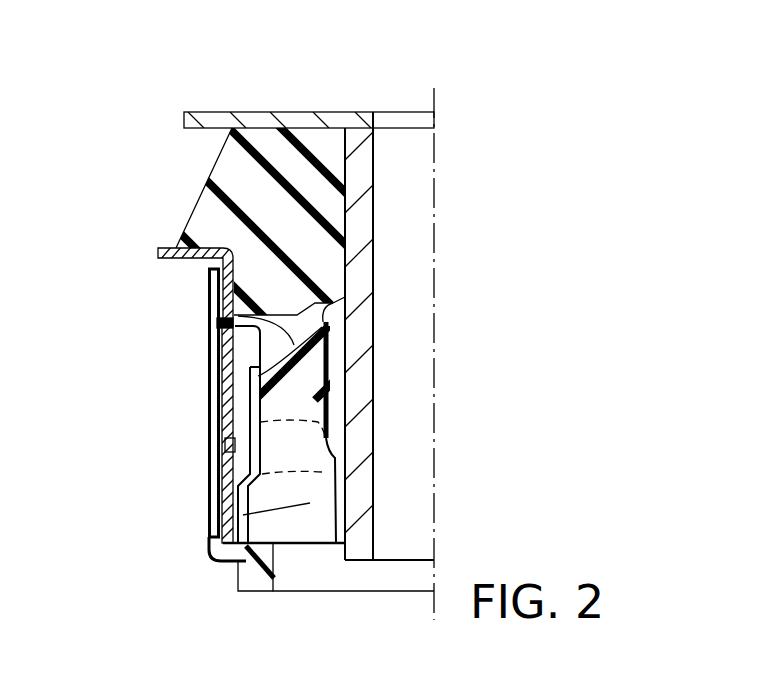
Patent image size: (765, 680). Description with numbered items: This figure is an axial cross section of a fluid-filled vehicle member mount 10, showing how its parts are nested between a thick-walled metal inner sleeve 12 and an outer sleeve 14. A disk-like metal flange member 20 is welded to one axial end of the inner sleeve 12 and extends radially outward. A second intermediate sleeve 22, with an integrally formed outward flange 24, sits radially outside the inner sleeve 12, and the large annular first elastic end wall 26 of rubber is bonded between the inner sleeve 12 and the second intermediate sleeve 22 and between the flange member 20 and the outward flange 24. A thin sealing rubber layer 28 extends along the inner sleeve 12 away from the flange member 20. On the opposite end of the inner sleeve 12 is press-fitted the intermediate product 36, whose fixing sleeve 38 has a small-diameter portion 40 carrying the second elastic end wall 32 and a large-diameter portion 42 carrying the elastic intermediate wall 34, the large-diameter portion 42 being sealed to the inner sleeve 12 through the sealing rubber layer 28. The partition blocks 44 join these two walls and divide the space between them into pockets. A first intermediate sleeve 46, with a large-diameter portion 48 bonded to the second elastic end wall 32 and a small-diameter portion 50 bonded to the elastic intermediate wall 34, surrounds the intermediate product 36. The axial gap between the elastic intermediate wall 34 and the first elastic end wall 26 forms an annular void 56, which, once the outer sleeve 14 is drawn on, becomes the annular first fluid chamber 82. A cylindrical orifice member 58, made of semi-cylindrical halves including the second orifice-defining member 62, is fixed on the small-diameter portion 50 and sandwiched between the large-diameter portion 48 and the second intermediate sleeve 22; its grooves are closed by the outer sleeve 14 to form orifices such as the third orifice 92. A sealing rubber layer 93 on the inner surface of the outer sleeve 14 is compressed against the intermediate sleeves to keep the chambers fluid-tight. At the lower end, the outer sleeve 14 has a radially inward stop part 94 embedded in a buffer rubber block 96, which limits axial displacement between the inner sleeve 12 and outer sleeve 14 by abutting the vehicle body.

The member mount 10 is at (178, 73).
The inner sleeve 12 is at (362, 213).
The outer sleeve 14 is at (222, 426).
The flange member 20 is at (257, 120).
The second intermediate sleeve 22 is at (208, 282).
The outward flange 24 is at (172, 250).
The first elastic end wall 26 is at (235, 178).
The sealing rubber layer 28 is at (340, 397).
The second elastic end wall 32 is at (285, 503).
The elastic intermediate wall 34 is at (323, 352).
The intermediate product 36 is at (305, 508).
The fixing sleeve 38 is at (318, 380).
The small-diameter portion 40 is at (340, 500).
The large-diameter portion 42 is at (318, 416).
The partition block 44 is at (312, 437).
The first intermediate sleeve 46 is at (213, 538).
The large-diameter portion 48 is at (210, 513).
The small-diameter portion 50 is at (248, 405).
The annular void 56 is at (224, 318).
The orifice member 58 is at (213, 365).
The second semi-cylindrical orifice-defining member 62 is at (237, 348).
The first fluid chamber 82 is at (318, 298).
The third orifice 92 is at (226, 447).
The sealing rubber layer 93 is at (240, 476).
The stop part 94 is at (240, 563).
The buffer rubber block 96 is at (257, 580).